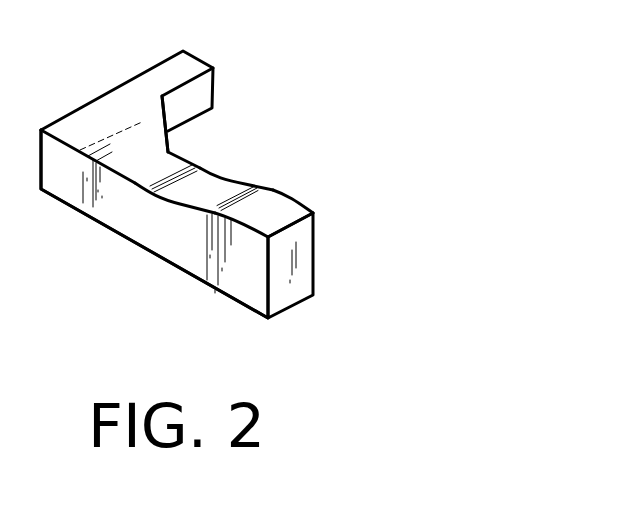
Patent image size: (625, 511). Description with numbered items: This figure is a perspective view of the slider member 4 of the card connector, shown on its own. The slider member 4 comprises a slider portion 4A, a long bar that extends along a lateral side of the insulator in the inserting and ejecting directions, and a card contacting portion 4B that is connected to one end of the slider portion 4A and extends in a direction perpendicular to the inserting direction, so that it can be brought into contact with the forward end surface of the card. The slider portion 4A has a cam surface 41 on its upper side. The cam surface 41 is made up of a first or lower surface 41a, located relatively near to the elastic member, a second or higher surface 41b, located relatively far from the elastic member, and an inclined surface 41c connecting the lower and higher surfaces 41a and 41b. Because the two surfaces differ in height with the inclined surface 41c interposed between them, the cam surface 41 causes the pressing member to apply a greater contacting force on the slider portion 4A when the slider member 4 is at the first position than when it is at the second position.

The slider member 4 is at (252, 183).
The cam surface 41 is at (213, 227).
The lower surface 41a is at (147, 160).
The higher surface 41b is at (267, 213).
The inclined surface 41c is at (190, 205).
The slider portion 4A is at (196, 255).
The card contacting portion 4B is at (167, 77).